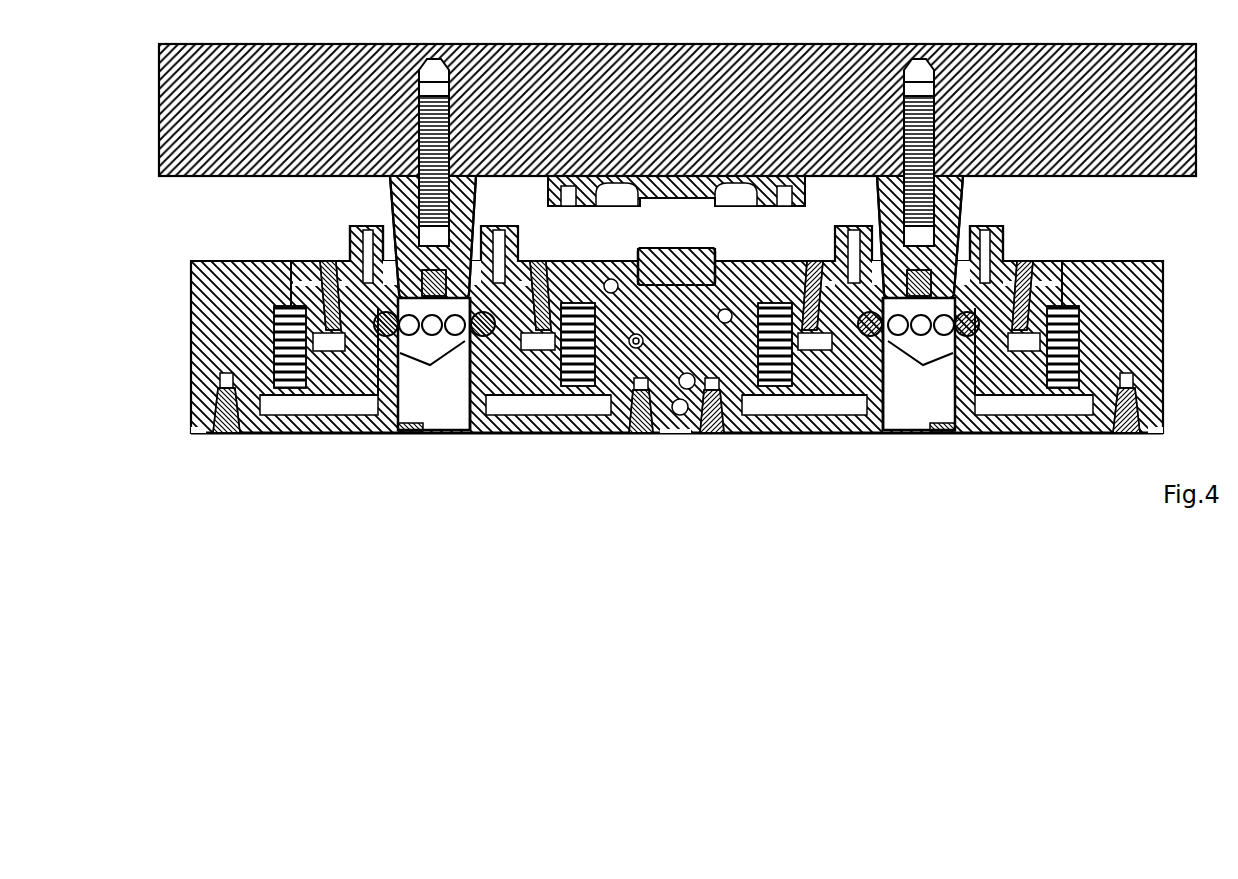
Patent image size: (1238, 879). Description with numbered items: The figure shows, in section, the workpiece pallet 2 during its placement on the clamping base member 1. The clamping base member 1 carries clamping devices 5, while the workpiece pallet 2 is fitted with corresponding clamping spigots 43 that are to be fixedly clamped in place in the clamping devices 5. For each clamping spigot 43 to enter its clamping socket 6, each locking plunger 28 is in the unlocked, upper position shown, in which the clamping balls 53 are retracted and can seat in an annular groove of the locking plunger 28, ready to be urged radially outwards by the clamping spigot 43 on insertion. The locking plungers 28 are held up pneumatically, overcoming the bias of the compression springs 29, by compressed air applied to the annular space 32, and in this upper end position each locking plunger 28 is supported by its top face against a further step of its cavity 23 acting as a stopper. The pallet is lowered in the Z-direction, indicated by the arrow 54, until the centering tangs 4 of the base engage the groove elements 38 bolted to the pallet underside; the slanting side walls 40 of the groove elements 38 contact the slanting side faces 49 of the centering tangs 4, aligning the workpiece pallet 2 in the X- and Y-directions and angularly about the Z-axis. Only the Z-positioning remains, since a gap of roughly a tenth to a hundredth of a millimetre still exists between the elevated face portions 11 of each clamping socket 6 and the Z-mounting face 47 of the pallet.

The clamping base member 1 is at (1138, 300).
The workpiece pallet 2 is at (1162, 158).
The centering tang 4 is at (668, 250).
The clamping device 5 is at (442, 413).
The clamping socket 6 is at (403, 413).
The elevated face portion 11 is at (352, 210).
The cavity 23 is at (501, 398).
The locking plunger 28 is at (327, 372).
The compression spring 29 is at (277, 387).
The annular space 32 is at (519, 398).
The groove element 38 is at (585, 193).
The slanting side wall 40 is at (636, 200).
The clamping spigot 43 is at (462, 210).
The Z-mounting face 47 is at (354, 175).
The slanting side face 49 is at (622, 241).
The clamping ball 53 is at (676, 364).
The arrow 54 is at (120, 180).